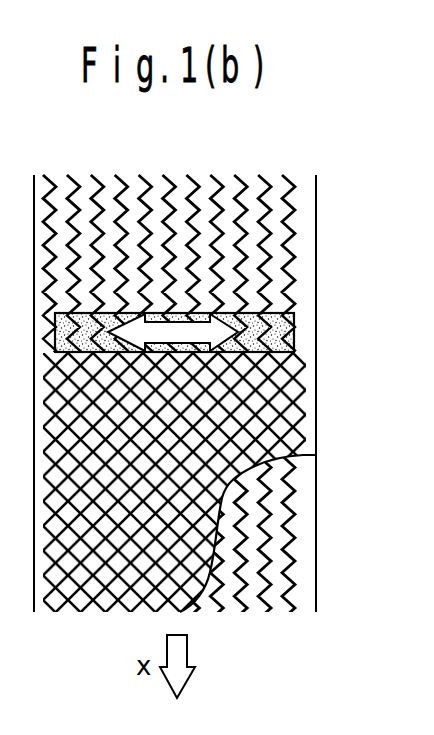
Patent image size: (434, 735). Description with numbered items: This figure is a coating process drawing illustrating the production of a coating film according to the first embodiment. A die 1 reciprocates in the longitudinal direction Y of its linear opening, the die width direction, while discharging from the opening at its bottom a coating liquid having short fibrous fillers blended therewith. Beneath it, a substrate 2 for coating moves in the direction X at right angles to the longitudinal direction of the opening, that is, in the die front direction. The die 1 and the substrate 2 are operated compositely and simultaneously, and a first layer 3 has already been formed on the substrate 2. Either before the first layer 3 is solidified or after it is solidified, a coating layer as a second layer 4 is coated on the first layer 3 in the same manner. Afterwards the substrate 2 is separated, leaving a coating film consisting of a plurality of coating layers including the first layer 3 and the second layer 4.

The die 1 is at (283, 332).
The substrate for coating 2 is at (290, 243).
The first layer 3 is at (278, 512).
The second layer 4 is at (273, 432).